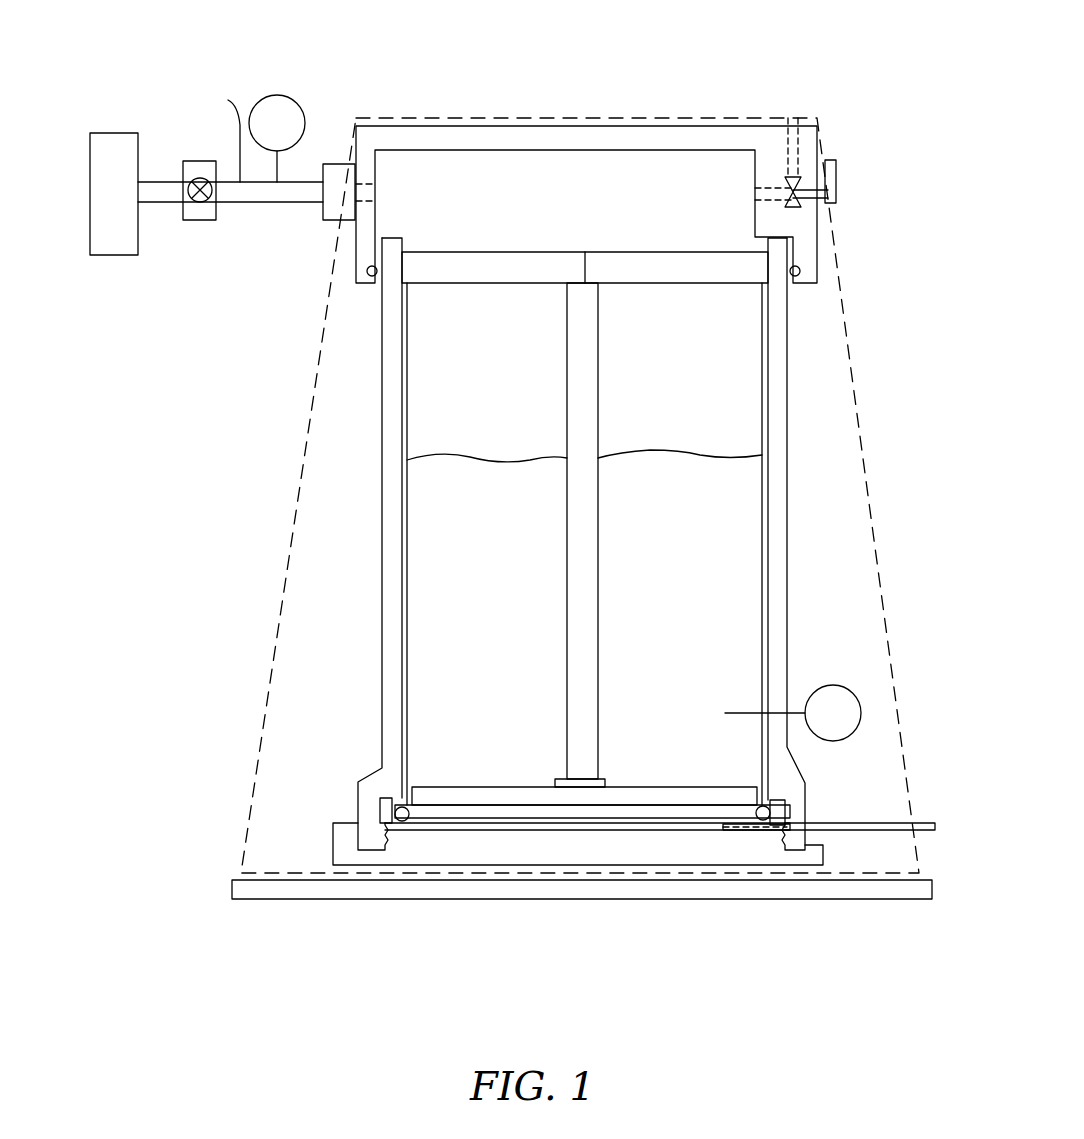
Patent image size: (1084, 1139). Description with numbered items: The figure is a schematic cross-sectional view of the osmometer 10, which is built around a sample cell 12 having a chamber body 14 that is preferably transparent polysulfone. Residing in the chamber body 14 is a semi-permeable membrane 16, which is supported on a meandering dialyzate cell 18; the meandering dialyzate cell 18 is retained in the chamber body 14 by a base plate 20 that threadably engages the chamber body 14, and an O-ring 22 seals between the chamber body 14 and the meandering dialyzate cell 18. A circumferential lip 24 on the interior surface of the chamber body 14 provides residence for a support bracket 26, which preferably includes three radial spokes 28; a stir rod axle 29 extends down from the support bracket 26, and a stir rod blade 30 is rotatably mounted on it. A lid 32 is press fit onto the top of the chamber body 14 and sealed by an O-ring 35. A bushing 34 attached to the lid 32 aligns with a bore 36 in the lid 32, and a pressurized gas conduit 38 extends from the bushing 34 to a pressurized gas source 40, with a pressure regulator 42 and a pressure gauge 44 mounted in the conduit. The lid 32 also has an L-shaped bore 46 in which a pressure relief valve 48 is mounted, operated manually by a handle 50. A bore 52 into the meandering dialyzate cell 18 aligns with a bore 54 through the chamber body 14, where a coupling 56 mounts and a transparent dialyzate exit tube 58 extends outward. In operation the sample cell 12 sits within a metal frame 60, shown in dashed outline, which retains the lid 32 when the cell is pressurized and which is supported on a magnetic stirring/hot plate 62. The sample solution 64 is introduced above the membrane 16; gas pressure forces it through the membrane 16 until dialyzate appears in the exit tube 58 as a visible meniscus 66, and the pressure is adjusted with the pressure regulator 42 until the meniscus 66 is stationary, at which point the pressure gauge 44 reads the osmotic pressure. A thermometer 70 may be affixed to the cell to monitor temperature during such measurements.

The osmometer 10 is at (200, 552).
The sample cell 12 is at (788, 553).
The chamber body 14 is at (382, 578).
The membrane 16 is at (530, 820).
The meandering dialyzate cell 18 is at (603, 829).
The base plate 20 is at (675, 855).
The O-ring 22 is at (405, 805).
The circumferential lip 24 is at (410, 280).
The support bracket 26 is at (606, 252).
The radial spokes 28 is at (470, 278).
The stir rod axle 29 is at (598, 590).
The stir rod blade 30 is at (478, 790).
The lid 32 is at (530, 135).
The bushing 34 is at (330, 222).
The O-ring 35 is at (805, 270).
The bore 36 is at (385, 192).
The pressurized gas conduit 38 is at (228, 100).
The pressurized gas source 40 is at (128, 243).
The pressure regulator 42 is at (200, 222).
The pressure gauge 44 is at (293, 96).
The L-shaped bore 46 is at (793, 130).
The pressure relief valve 48 is at (800, 210).
The handle 50 is at (835, 178).
The bore 52 is at (723, 830).
The bore 54 is at (790, 810).
The coupling 56 is at (815, 810).
The transparent dialyzate exit tube 58 is at (930, 825).
The frame 60 is at (303, 462).
The magnetic stirring/hot plate 62 is at (325, 890).
The sample solution 64 is at (658, 453).
The meniscus 66 is at (860, 850).
The thermometer 70 is at (843, 686).